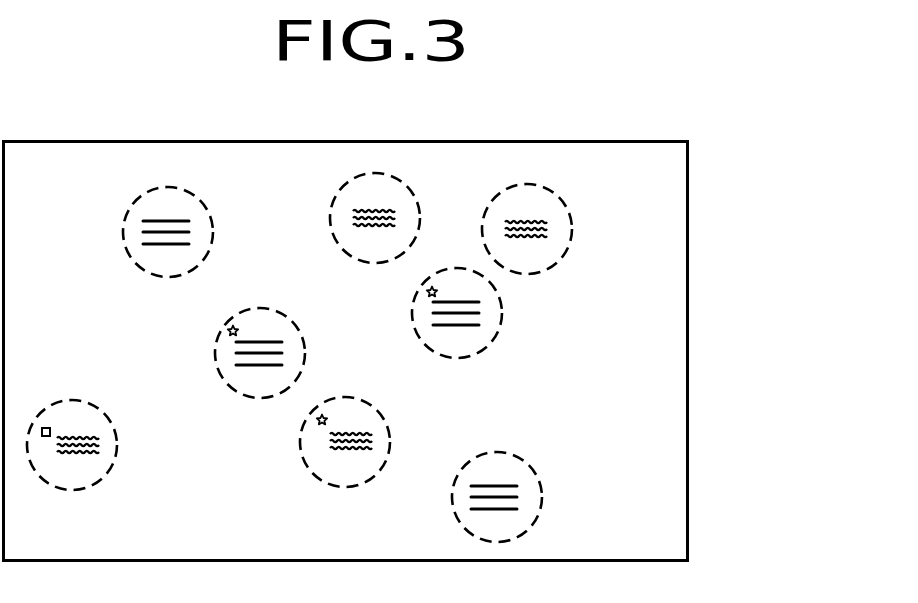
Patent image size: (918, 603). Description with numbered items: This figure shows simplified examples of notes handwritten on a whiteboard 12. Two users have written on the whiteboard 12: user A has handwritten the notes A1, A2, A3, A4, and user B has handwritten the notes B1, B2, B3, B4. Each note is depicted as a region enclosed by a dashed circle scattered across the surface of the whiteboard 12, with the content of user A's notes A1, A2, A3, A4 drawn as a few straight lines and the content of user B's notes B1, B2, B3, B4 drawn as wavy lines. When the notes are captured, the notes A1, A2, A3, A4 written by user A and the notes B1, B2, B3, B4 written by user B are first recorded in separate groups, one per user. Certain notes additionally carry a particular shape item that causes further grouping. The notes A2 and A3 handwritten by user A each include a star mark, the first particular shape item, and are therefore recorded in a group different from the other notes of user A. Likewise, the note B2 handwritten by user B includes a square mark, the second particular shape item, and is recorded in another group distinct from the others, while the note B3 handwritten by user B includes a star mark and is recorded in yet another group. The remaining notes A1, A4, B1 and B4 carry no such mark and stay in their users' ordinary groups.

The whiteboard 12 is at (674, 376).
The note A1 is at (202, 203).
The note A2 is at (297, 322).
The note A3 is at (502, 315).
The note A4 is at (532, 468).
The note B1 is at (412, 185).
The note B2 is at (108, 415).
The note B3 is at (382, 412).
The note B4 is at (565, 193).